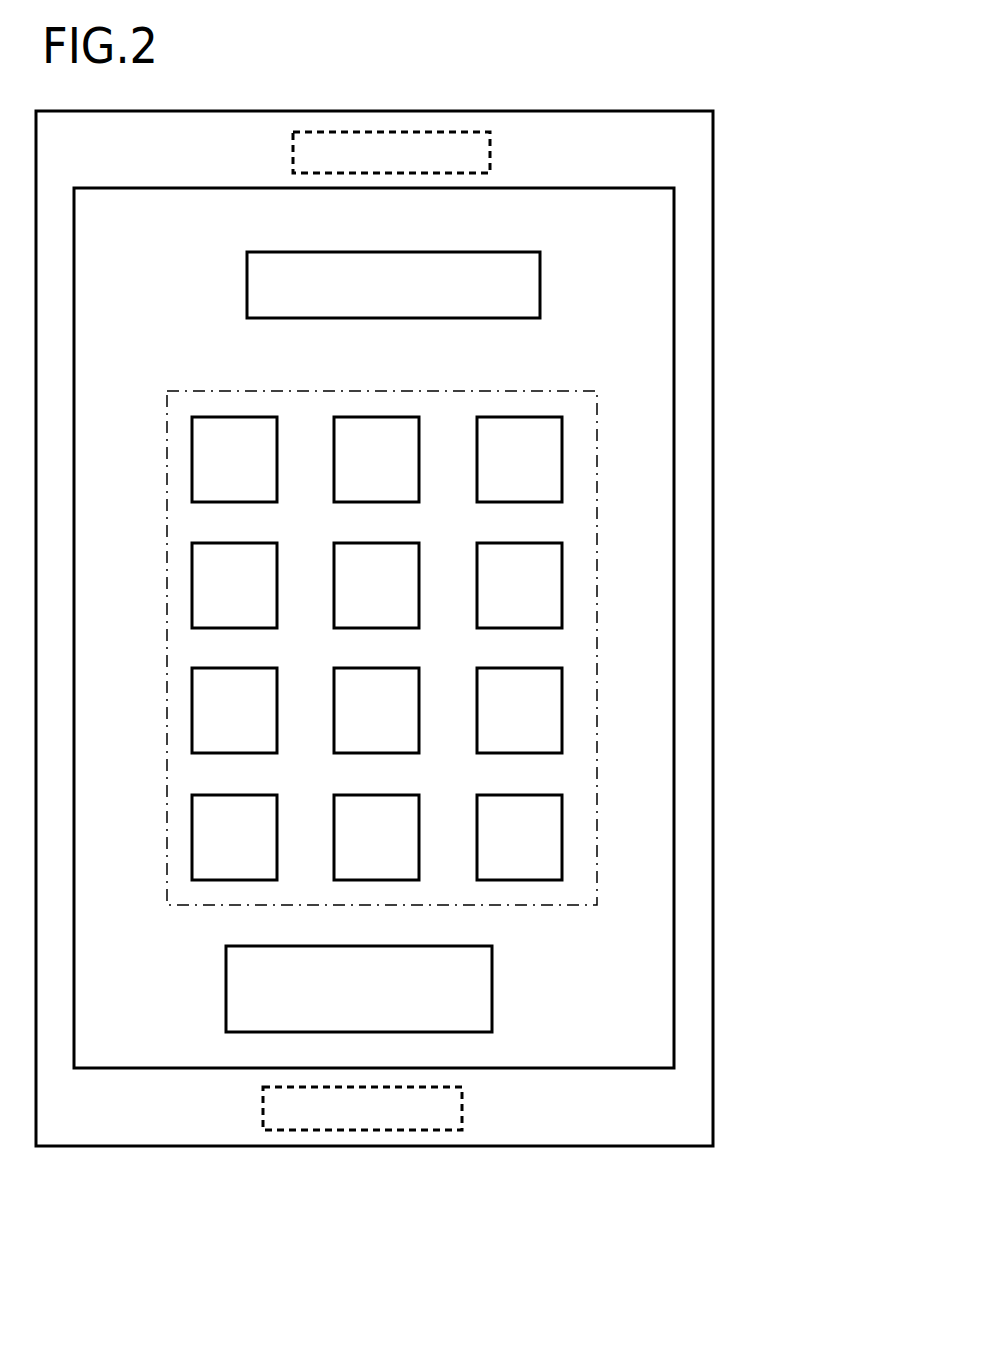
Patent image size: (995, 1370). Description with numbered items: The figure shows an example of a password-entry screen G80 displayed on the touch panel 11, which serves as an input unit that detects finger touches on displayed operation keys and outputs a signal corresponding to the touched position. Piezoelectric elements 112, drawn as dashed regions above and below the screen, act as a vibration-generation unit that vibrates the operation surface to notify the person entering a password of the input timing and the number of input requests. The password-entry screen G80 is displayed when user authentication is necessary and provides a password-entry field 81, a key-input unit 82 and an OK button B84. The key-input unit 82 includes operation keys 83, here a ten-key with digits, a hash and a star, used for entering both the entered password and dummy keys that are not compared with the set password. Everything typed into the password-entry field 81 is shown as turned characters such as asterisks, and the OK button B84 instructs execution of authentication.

The touch panel 11 is at (580, 110).
The piezoelectric elements 112 is at (413, 130).
The password-entry screen G80 is at (578, 187).
The password-entry field 81 is at (460, 252).
The key-input unit 82 is at (452, 383).
The operation keys 83 is at (563, 593).
The OK button B84 is at (492, 978).